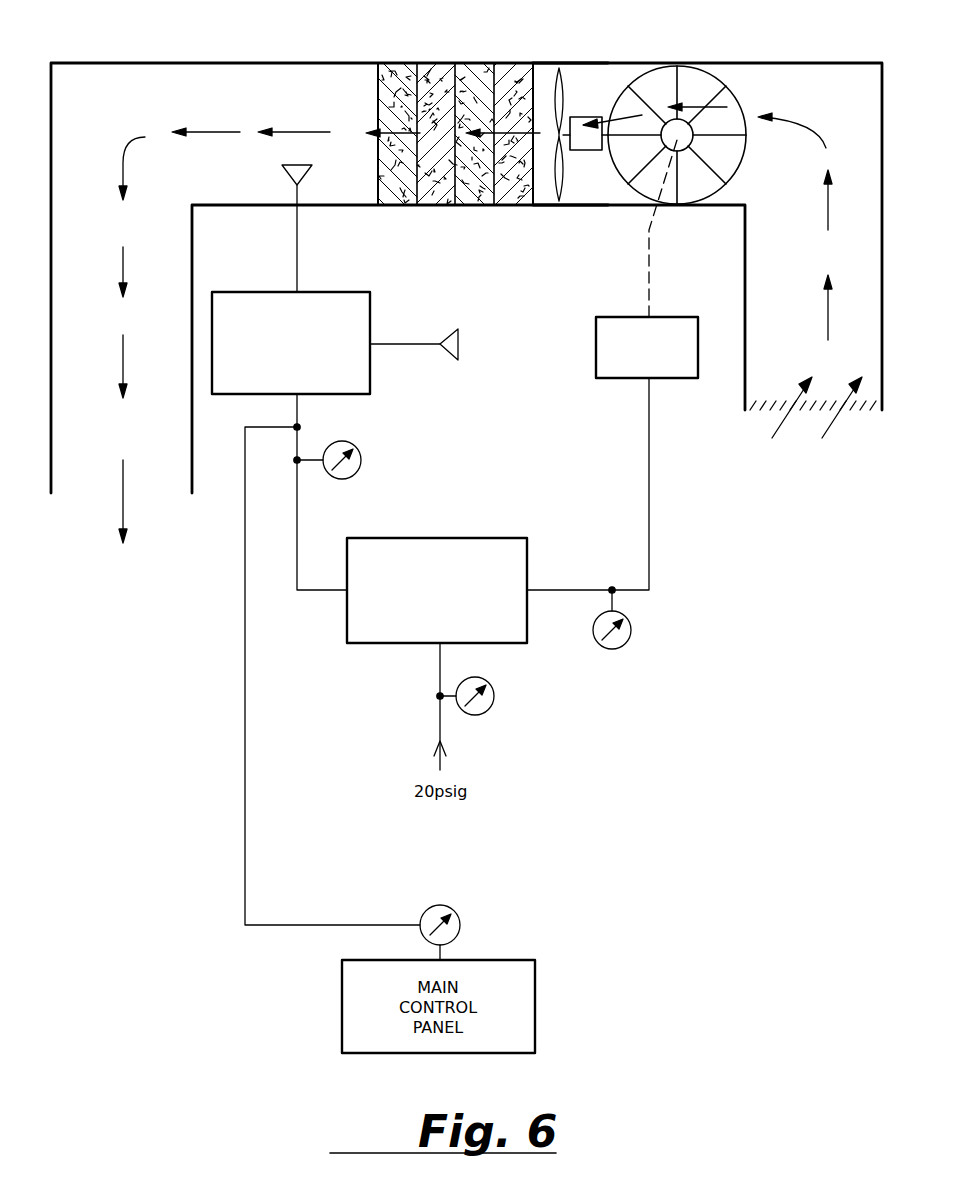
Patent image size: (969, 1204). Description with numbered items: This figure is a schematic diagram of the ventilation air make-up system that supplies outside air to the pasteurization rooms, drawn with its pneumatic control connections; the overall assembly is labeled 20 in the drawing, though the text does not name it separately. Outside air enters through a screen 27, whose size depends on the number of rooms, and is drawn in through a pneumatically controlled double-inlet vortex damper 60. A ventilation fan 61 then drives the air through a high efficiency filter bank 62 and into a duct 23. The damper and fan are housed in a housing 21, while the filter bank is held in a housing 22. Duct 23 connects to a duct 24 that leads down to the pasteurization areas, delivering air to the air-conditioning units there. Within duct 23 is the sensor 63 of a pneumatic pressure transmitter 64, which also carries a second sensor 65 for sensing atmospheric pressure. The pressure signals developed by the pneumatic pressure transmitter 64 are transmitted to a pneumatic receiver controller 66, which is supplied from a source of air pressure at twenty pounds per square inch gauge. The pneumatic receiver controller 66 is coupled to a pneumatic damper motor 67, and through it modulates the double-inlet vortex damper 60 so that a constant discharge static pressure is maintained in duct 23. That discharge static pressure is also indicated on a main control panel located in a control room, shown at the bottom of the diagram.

The air handling housing 20 is at (777, 82).
The housing 21 is at (548, 70).
The housing 22 is at (396, 63).
The duct 23 is at (258, 67).
The duct 24 is at (57, 282).
The screen 27 is at (765, 412).
The double-inlet vortex damper 60 is at (692, 83).
The ventilation fan 61 is at (562, 75).
The high efficiency filter bank 62 is at (505, 65).
The sensor 63 is at (292, 173).
The pneumatic pressure transmitter 64 is at (352, 308).
The sensor 65 is at (460, 337).
The pneumatic receiver controller 66 is at (470, 547).
The pneumatic damper motor 67 is at (605, 323).